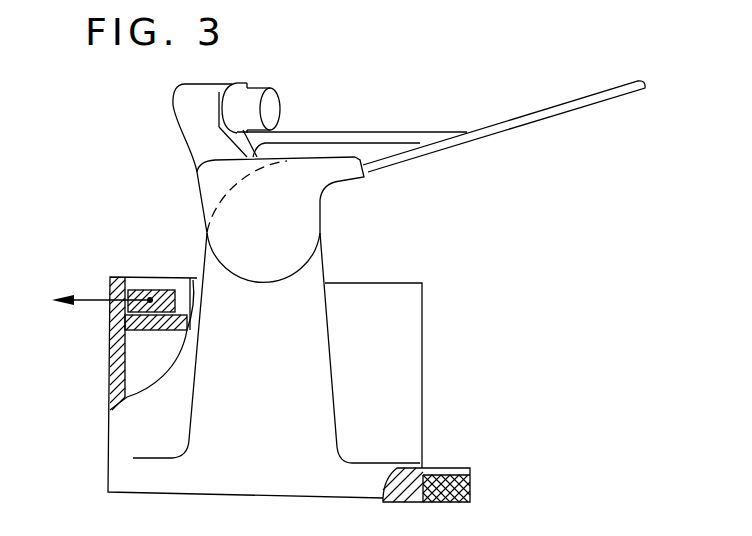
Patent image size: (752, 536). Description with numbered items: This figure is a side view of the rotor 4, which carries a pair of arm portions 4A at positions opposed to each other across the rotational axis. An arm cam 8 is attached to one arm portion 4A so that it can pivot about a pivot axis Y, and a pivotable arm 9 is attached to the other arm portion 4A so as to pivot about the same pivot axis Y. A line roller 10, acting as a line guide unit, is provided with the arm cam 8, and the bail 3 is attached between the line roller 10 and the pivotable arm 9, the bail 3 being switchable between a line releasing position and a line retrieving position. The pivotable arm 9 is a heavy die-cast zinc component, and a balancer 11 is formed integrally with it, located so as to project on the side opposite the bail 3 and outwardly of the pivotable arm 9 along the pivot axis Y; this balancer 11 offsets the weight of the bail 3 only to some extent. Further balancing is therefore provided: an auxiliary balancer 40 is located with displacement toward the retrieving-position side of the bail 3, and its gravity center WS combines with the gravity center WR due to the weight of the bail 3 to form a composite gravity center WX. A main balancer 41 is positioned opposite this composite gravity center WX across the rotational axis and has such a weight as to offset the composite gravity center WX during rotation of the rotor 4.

The bail 3 is at (557, 113).
The rotor 4 is at (107, 430).
The arm portion 4A is at (318, 372).
The arm cam 8 is at (180, 121).
The pivotable arm 9 is at (307, 237).
The line roller 10 is at (237, 110).
The balancer 11 is at (207, 187).
The auxiliary balancer 40 is at (447, 468).
The main balancer 41 is at (143, 290).
The pivot axis Y is at (268, 232).
The gravity center due to the weight of the bail WR is at (370, 149).
The composite gravity center WX is at (402, 307).
The gravity center of the auxiliary balancer WS is at (442, 488).